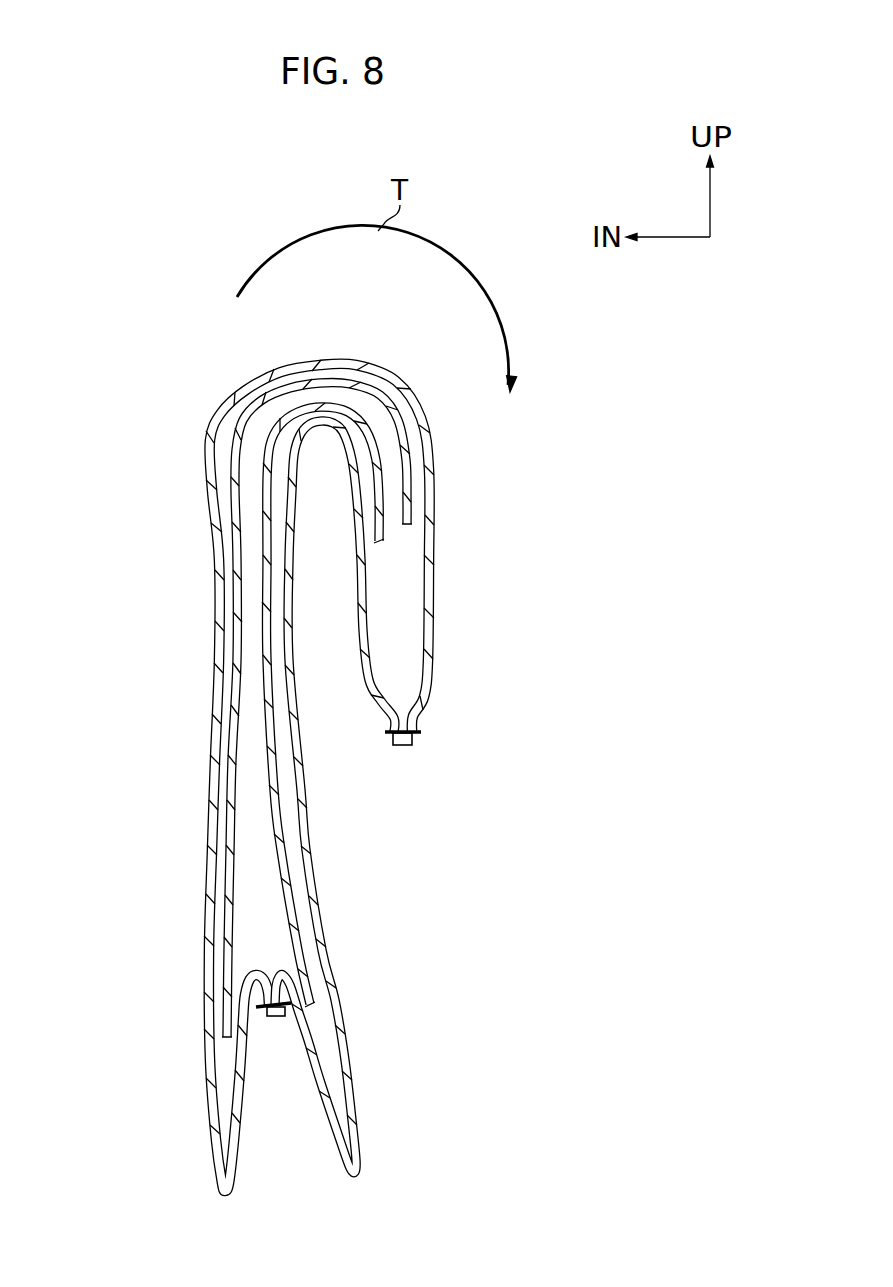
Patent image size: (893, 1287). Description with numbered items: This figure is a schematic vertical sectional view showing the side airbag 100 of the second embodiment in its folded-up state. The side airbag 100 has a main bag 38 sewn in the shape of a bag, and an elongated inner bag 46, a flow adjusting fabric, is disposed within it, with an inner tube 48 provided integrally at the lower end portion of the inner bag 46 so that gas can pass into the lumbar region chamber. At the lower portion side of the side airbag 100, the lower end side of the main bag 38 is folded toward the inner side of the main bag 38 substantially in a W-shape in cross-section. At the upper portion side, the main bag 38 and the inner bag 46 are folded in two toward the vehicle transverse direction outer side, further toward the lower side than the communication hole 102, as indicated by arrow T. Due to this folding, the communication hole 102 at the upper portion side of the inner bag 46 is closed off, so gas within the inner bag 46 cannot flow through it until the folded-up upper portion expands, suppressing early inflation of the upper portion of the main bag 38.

The side airbag 100 is at (167, 378).
The main bag 38 is at (438, 581).
The inner bag 46 is at (253, 406).
The inner tube 48 is at (297, 913).
The communication hole 102 is at (398, 628).